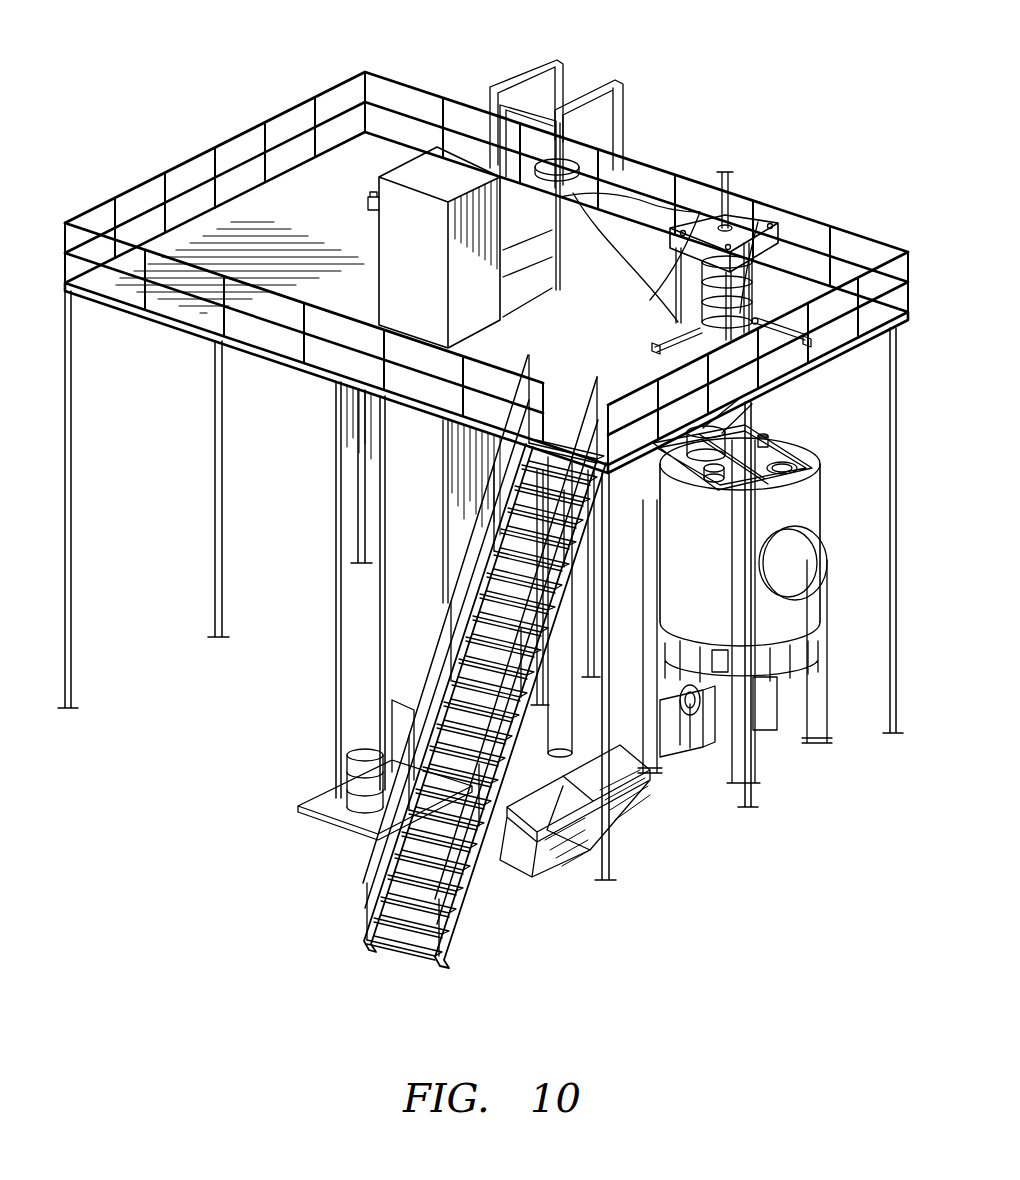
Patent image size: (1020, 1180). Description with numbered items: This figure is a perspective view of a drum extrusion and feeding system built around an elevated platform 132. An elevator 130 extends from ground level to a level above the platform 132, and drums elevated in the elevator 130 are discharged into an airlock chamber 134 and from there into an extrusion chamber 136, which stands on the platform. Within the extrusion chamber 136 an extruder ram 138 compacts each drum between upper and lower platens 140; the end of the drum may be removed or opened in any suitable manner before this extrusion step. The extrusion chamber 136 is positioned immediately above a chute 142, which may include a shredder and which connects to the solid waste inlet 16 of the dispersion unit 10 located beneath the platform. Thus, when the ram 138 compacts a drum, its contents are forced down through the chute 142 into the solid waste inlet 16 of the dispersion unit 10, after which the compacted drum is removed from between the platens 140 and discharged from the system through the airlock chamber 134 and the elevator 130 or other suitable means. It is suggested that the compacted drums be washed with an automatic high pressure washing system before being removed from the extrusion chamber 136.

The dispersion unit 10 is at (808, 515).
The solid waste inlet 16 is at (705, 475).
The elevator 130 is at (379, 230).
The platform 132 is at (186, 336).
The airlock chamber 134 is at (543, 158).
The extrusion chamber 136 is at (778, 226).
The extruder ram 138 is at (725, 168).
The platens 140 is at (752, 225).
The chute 142 is at (735, 410).